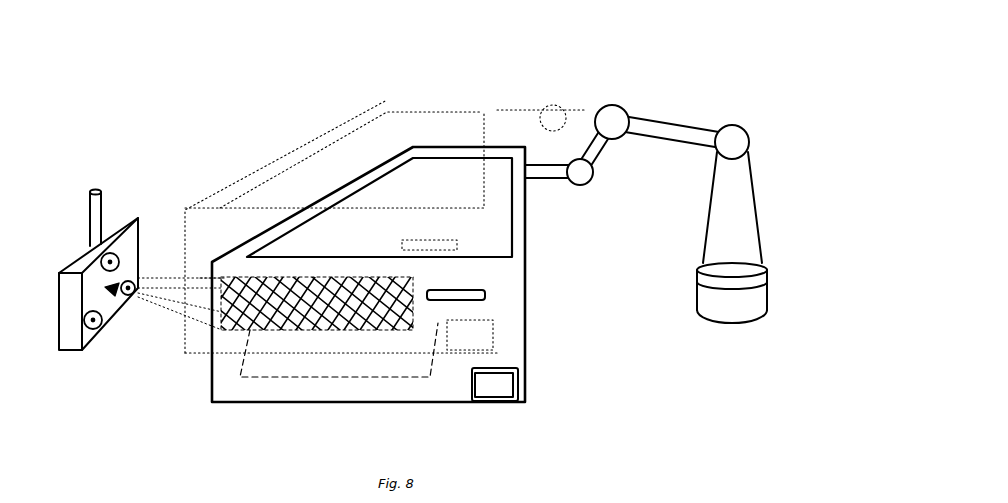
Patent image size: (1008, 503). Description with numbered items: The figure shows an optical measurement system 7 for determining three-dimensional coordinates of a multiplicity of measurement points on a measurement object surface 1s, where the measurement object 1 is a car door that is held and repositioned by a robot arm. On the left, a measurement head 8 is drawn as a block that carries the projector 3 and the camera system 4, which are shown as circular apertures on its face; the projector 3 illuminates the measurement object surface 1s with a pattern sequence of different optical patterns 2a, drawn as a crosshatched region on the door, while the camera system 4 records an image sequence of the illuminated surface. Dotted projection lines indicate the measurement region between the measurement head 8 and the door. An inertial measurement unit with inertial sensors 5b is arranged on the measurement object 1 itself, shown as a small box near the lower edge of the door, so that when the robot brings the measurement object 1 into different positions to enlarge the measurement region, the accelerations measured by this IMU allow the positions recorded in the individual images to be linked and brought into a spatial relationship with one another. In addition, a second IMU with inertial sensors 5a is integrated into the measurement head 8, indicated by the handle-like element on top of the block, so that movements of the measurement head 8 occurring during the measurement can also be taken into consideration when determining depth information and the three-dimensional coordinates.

The measurement object 1 is at (452, 81).
The measurement object surface 1s is at (283, 342).
The optical patterns 2a is at (363, 293).
The projector 3 is at (118, 296).
The camera system 4 is at (95, 349).
The inertial sensors 5a is at (78, 272).
The inertial sensors 5b is at (500, 382).
The optical measurement system 7 is at (190, 100).
The measurement head 8 is at (68, 347).